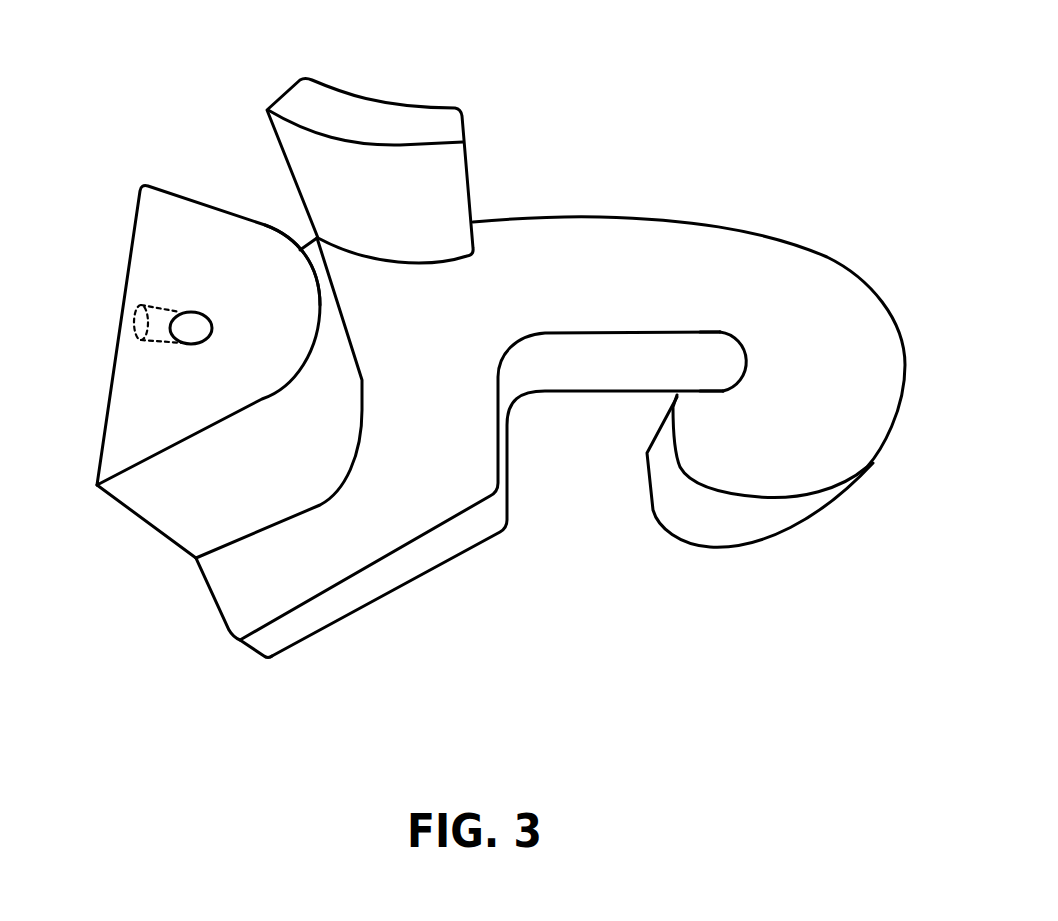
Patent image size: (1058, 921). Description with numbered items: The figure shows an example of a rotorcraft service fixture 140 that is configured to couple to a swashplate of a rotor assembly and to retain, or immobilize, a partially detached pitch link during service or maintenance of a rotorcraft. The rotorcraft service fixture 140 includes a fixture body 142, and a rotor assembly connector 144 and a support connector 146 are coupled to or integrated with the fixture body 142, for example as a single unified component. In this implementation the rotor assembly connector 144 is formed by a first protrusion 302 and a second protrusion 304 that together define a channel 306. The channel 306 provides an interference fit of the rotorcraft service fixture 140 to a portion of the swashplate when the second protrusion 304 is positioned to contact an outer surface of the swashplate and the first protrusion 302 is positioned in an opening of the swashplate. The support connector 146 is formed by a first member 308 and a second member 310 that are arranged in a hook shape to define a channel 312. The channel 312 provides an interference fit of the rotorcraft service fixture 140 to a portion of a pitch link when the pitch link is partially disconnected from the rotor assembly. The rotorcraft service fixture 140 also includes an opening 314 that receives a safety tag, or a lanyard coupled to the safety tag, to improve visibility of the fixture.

The rotorcraft service fixture 140 is at (712, 126).
The fixture body 142 is at (437, 468).
The rotor assembly connector 144 is at (500, 48).
The support connector 146 is at (840, 214).
The first protrusion 302 is at (142, 222).
The second protrusion 304 is at (340, 92).
The channel 306 is at (237, 182).
The first member 308 is at (642, 333).
The second member 310 is at (685, 425).
The channel 312 is at (702, 375).
The opening 314 is at (203, 316).